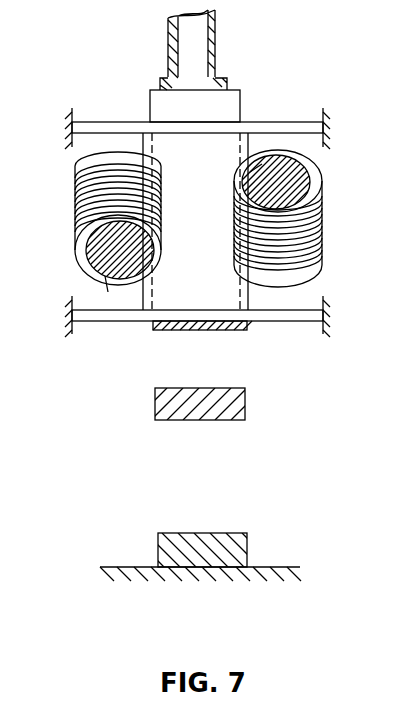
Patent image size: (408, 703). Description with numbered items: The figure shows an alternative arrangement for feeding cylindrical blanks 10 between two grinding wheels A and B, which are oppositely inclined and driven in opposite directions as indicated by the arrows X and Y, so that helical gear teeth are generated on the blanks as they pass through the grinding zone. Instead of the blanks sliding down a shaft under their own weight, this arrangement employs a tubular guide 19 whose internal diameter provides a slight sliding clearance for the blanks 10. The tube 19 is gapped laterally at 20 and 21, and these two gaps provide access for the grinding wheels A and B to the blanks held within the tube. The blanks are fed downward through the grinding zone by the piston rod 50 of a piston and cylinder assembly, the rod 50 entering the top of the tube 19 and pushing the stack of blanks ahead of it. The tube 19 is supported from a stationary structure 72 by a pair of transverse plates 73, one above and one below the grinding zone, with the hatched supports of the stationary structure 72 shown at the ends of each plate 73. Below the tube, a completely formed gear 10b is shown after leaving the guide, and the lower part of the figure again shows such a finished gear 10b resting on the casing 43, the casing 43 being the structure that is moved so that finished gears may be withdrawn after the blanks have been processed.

The piston rod 50 is at (210, 43).
The cylindrical blank 10 is at (228, 108).
The completely formed gear 10b is at (223, 330).
The tubular guide 19 is at (203, 165).
The lateral gap 20 is at (117, 231).
The lateral gap 21 is at (275, 208).
The stationary structure 72 is at (72, 121).
The transverse plate 73 is at (290, 120).
The casing 43 is at (133, 582).
The grinding wheel A is at (100, 244).
The grinding wheel B is at (307, 178).
The arrow X is at (109, 293).
The arrow Y is at (262, 164).